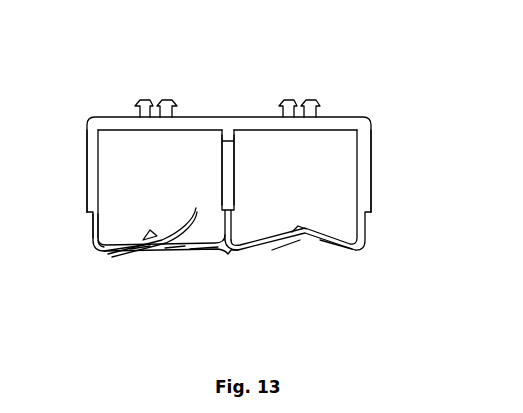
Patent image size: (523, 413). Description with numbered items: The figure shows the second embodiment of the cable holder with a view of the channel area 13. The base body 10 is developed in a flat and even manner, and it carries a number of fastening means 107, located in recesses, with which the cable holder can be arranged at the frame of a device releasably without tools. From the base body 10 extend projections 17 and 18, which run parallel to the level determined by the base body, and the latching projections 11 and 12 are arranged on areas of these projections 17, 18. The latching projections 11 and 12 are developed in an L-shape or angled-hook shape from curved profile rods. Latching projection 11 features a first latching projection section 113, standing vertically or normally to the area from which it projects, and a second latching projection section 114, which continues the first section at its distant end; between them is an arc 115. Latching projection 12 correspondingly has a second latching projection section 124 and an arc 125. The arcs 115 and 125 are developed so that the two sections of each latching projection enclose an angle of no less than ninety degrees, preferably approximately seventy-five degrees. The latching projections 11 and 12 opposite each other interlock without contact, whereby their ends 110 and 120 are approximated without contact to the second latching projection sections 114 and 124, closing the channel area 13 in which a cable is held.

The base body 10 is at (255, 83).
The latching projection 11 is at (88, 260).
The latching projection 12 is at (197, 260).
The channel area 13 is at (168, 179).
The projection 17 is at (232, 160).
The projection 18 is at (92, 158).
The fastening means 107 is at (166, 97).
The end of latching projection 110 is at (198, 212).
The first latching projection section 113 is at (92, 224).
The second latching projection section 114 is at (142, 252).
The arc 115 is at (102, 260).
The end of latching projection 120 is at (150, 230).
The second latching projection section 124 is at (172, 252).
The arc 125 is at (226, 250).